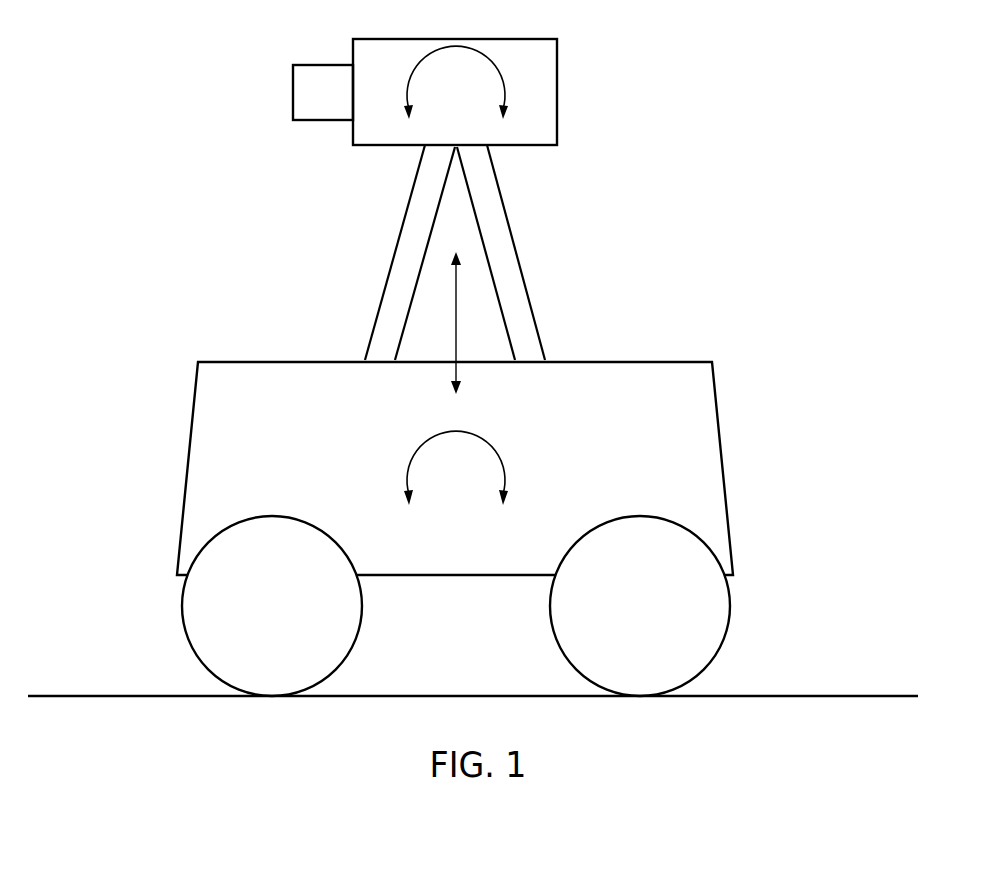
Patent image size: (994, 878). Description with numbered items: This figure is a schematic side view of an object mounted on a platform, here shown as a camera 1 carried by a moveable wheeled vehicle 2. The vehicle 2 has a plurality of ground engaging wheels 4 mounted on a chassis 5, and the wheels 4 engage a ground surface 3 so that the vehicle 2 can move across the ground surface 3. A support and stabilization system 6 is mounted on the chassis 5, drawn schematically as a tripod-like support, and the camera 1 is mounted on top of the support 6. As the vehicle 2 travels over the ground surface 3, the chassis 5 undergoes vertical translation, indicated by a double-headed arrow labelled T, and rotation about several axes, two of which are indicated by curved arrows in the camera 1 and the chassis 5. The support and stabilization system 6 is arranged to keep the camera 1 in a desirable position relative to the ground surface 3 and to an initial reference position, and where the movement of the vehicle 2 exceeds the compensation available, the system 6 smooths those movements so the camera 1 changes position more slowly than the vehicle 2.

The camera 1 is at (543, 73).
The wheeled vehicle 2 is at (765, 307).
The ground surface 3 is at (815, 696).
The ground engaging wheels 4 is at (198, 628).
The chassis 5 is at (707, 443).
The support and stabilization system 6 is at (556, 245).